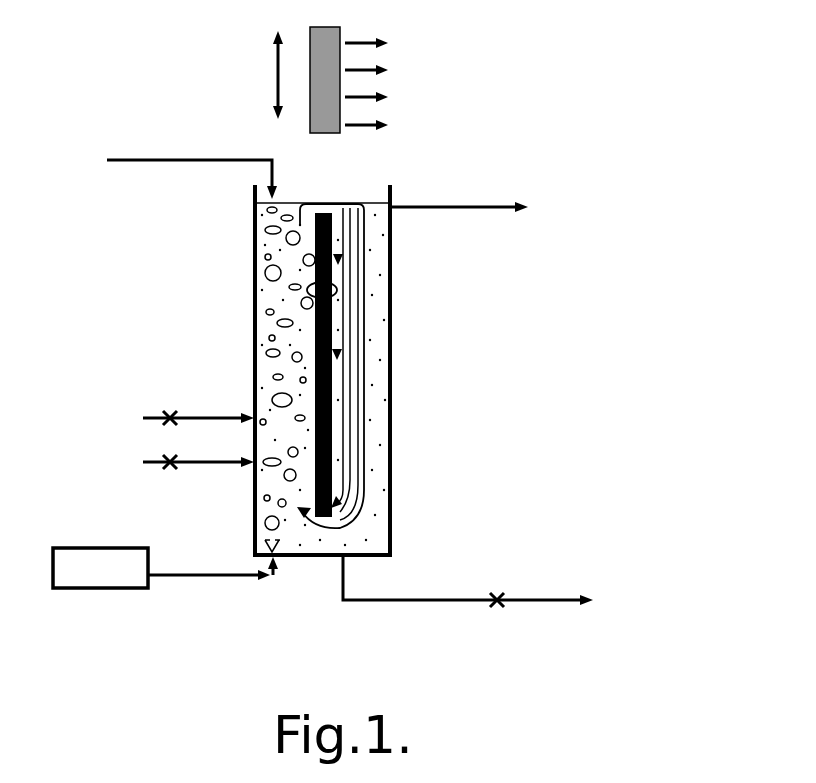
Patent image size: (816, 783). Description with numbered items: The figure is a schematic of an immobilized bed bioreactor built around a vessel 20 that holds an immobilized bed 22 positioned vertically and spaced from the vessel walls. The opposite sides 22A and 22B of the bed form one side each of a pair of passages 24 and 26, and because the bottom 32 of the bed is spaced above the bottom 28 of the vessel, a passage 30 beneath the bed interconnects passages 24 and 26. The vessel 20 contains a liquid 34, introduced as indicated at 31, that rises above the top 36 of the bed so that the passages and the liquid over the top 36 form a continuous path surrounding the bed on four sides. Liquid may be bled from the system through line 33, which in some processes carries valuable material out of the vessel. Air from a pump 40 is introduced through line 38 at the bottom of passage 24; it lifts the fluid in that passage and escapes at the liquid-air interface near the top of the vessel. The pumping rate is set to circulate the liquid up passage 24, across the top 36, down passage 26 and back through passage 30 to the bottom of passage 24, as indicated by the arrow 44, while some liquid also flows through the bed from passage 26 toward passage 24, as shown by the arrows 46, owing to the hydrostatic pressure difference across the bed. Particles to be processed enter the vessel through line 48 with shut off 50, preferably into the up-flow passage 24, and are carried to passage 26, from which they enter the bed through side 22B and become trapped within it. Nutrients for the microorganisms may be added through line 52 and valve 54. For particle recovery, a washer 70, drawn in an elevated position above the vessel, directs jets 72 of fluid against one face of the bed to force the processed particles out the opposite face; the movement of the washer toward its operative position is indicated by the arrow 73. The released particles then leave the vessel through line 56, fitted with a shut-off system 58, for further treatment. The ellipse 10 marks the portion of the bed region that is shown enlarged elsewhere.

The ellipse 10 is at (305, 292).
The vessel 20 is at (395, 277).
The immobilized bed 22 is at (326, 386).
The side of bed 22A is at (313, 258).
The side of bed 22B is at (332, 372).
The passage 24 is at (300, 386).
The passage 26 is at (372, 425).
The bottom of vessel 28 is at (367, 560).
The passage 30 is at (327, 542).
The liquid inlet line 31 is at (192, 166).
The bottom of bed 32 is at (350, 514).
The bleed line 33 is at (548, 223).
The liquid 34 is at (377, 315).
The top of bed 36 is at (352, 205).
The air line 38 is at (233, 573).
The pump 40 is at (105, 547).
The arrow 44 is at (360, 460).
The arrows 46 is at (351, 272).
The particle feed line 48 is at (143, 418).
The shut off 50 is at (165, 415).
The nutrient line 52 is at (143, 461).
The valve 54 is at (160, 466).
The particle removal line 56 is at (476, 600).
The shut-off system 58 is at (495, 598).
The washer 70 is at (338, 33).
The jets 72 is at (384, 124).
The movement direction arrow 73 is at (276, 60).